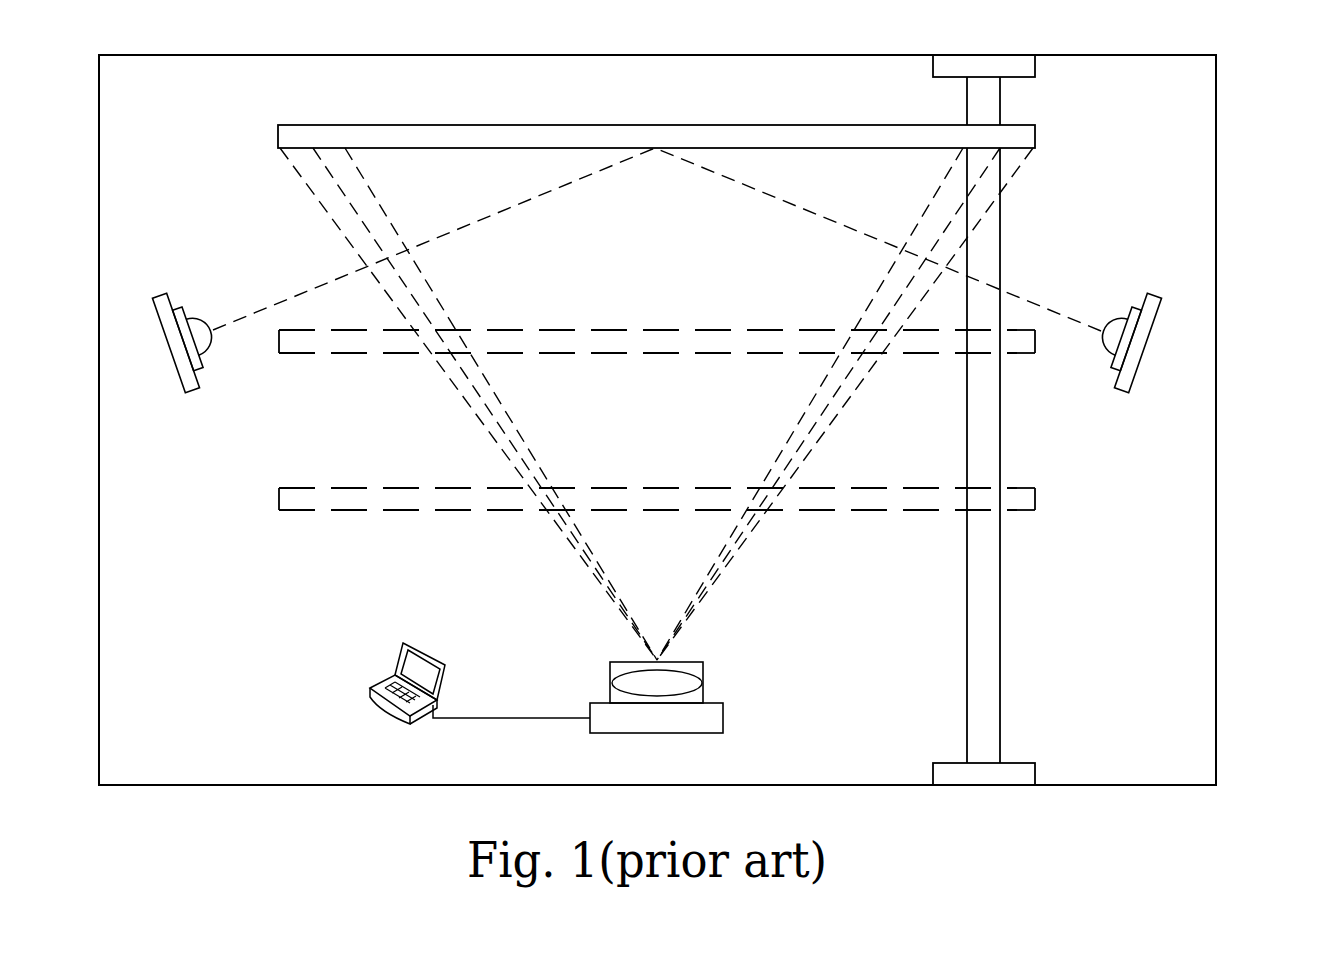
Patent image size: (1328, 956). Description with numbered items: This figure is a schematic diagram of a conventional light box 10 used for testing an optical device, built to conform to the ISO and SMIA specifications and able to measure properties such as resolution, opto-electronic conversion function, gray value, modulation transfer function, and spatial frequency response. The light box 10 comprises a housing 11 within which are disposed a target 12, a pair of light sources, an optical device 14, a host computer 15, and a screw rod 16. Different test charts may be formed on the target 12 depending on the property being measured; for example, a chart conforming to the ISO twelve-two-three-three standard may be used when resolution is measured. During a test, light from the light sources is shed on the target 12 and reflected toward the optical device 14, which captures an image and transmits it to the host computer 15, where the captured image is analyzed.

The light box 10 is at (1314, 83).
The housing 11 is at (1216, 420).
The target 12 is at (667, 135).
The optical device 14 is at (707, 713).
The host computer 15 is at (368, 690).
The screw rod 16 is at (1001, 603).